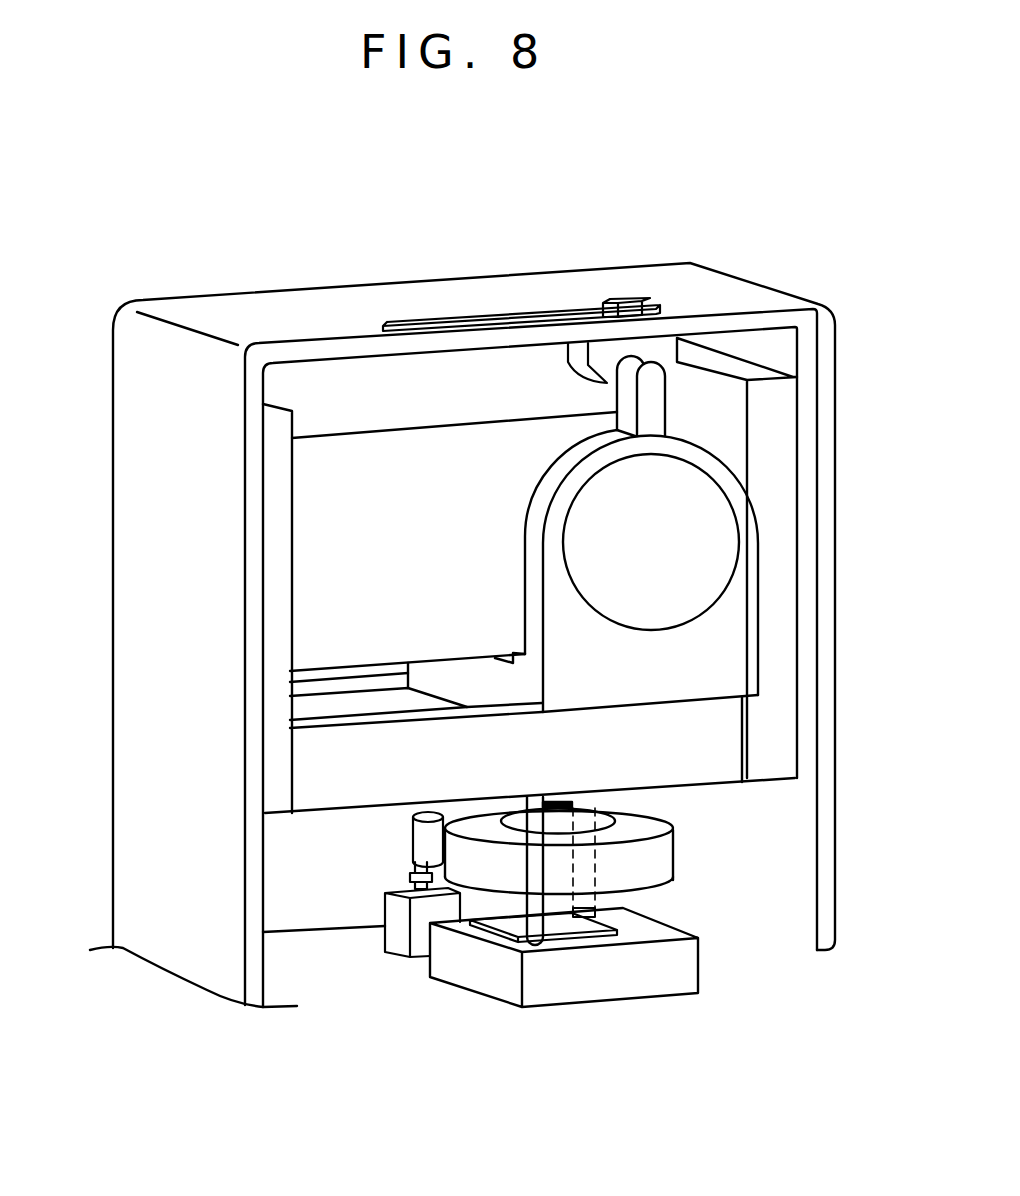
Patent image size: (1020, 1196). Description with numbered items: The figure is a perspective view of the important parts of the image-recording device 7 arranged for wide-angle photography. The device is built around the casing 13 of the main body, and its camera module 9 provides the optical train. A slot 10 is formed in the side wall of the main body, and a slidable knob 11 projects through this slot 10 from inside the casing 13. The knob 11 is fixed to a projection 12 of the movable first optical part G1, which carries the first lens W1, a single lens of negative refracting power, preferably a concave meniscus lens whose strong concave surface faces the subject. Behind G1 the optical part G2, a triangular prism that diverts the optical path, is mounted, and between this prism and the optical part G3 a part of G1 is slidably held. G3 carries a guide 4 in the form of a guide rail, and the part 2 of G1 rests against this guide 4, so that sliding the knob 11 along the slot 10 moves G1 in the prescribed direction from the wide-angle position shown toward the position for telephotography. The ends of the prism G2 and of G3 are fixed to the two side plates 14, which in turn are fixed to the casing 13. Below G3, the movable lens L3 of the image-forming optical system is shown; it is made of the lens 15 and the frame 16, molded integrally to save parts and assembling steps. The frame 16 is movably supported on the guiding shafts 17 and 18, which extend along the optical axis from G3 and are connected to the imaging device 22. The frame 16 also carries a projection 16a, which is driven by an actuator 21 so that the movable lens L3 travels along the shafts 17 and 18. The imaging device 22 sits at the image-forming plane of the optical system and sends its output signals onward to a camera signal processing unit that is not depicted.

The image-recording device 7 is at (255, 260).
The casing 13 is at (148, 512).
The side plates 14 is at (270, 648).
The optical part G2 is at (350, 465).
The slot 10 is at (416, 318).
The knob 11 is at (630, 307).
The projection 12 is at (652, 398).
The first optical part G1 is at (754, 586).
The first lens W1 is at (704, 606).
The part 2 is at (483, 680).
The guide 4 is at (305, 688).
The optical part G3 is at (734, 752).
The camera module 9 is at (778, 806).
The projection 16a is at (436, 820).
The actuator 21 is at (393, 938).
The frame 16 is at (495, 875).
The lens 15 is at (620, 821).
The shaft 17 is at (592, 805).
The movable lens L3 is at (657, 860).
The shaft 18 is at (533, 903).
The imaging device 22 is at (660, 980).